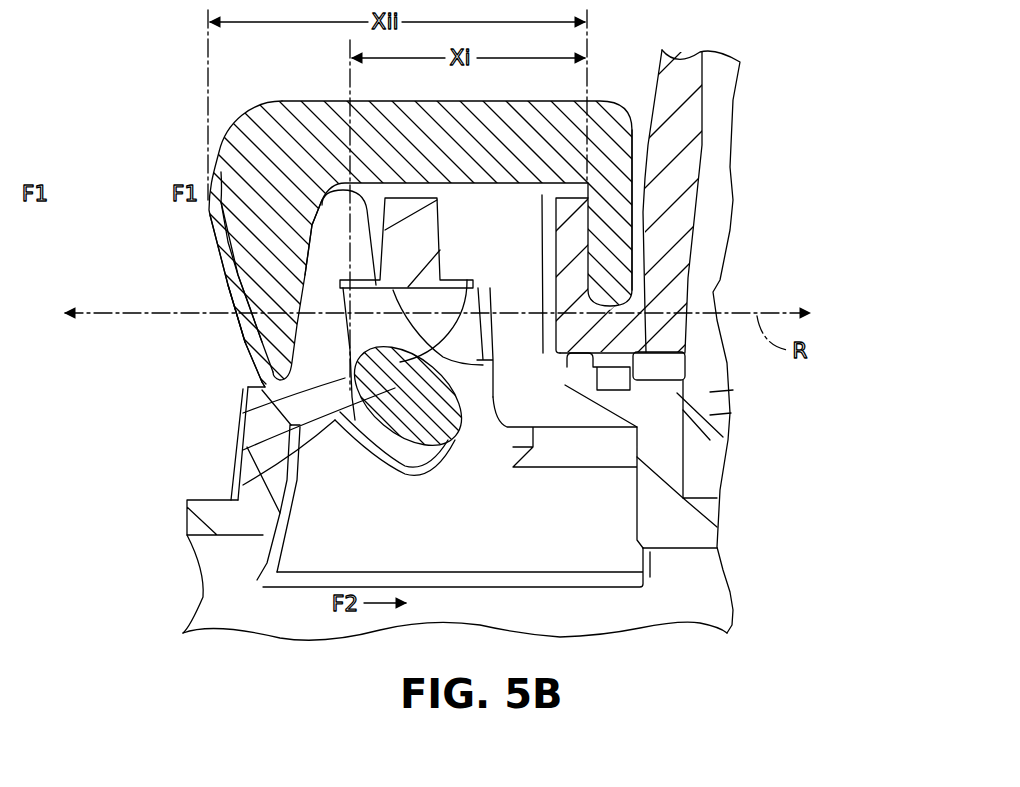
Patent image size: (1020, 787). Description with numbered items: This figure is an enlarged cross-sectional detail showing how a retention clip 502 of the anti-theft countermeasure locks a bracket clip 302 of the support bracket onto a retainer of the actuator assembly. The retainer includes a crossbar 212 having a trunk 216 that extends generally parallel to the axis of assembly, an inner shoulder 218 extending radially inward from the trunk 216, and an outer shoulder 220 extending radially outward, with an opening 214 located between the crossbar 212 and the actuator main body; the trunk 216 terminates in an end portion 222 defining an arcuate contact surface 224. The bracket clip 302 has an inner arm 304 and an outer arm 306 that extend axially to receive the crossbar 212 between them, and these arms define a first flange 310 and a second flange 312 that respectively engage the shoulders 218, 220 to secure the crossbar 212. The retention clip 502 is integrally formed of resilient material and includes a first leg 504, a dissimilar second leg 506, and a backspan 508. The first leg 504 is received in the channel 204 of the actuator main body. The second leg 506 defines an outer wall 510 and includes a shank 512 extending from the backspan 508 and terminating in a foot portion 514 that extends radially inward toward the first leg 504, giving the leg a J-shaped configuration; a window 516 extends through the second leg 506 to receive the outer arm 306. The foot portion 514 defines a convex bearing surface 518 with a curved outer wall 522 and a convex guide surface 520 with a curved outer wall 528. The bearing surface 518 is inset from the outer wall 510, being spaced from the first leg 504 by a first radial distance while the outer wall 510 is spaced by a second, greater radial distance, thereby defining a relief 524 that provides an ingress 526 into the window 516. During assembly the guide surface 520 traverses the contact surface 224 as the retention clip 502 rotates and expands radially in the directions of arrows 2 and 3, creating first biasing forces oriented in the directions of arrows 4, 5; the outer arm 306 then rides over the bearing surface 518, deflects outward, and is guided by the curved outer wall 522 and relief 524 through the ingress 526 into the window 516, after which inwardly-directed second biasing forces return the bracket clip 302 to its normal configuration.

The arrow 2 is at (52, 147).
The arrow 3 is at (168, 147).
The arrow 4 is at (55, 197).
The arrow 5 is at (170, 197).
The channel 204 is at (465, 340).
The crossbar 212 is at (398, 192).
The opening 214 is at (553, 217).
The trunk 216 is at (421, 262).
The inner shoulder 218 is at (442, 440).
The outer shoulder 220 is at (402, 481).
The end portion 222 is at (469, 386).
The contact surface 224 is at (378, 348).
The bracket clip 302 is at (229, 432).
The inner arm 304 is at (556, 255).
The outer arm 306 is at (313, 235).
The first flange 310 is at (533, 261).
The second flange 312 is at (350, 272).
The retention clip 502 is at (227, 112).
The first leg 504 is at (637, 143).
The second leg 506 is at (232, 321).
The backspan 508 is at (520, 120).
The outer wall 510 is at (254, 335).
The shank 512 is at (229, 299).
The foot portion 514 is at (406, 491).
The window 516 is at (243, 414).
The bearing surface 518 is at (243, 485).
The guide surface 520 is at (687, 433).
The curved outer wall 522 is at (357, 438).
The relief 524 is at (366, 455).
The ingress 526 is at (334, 474).
The curved outer wall 528 is at (707, 402).